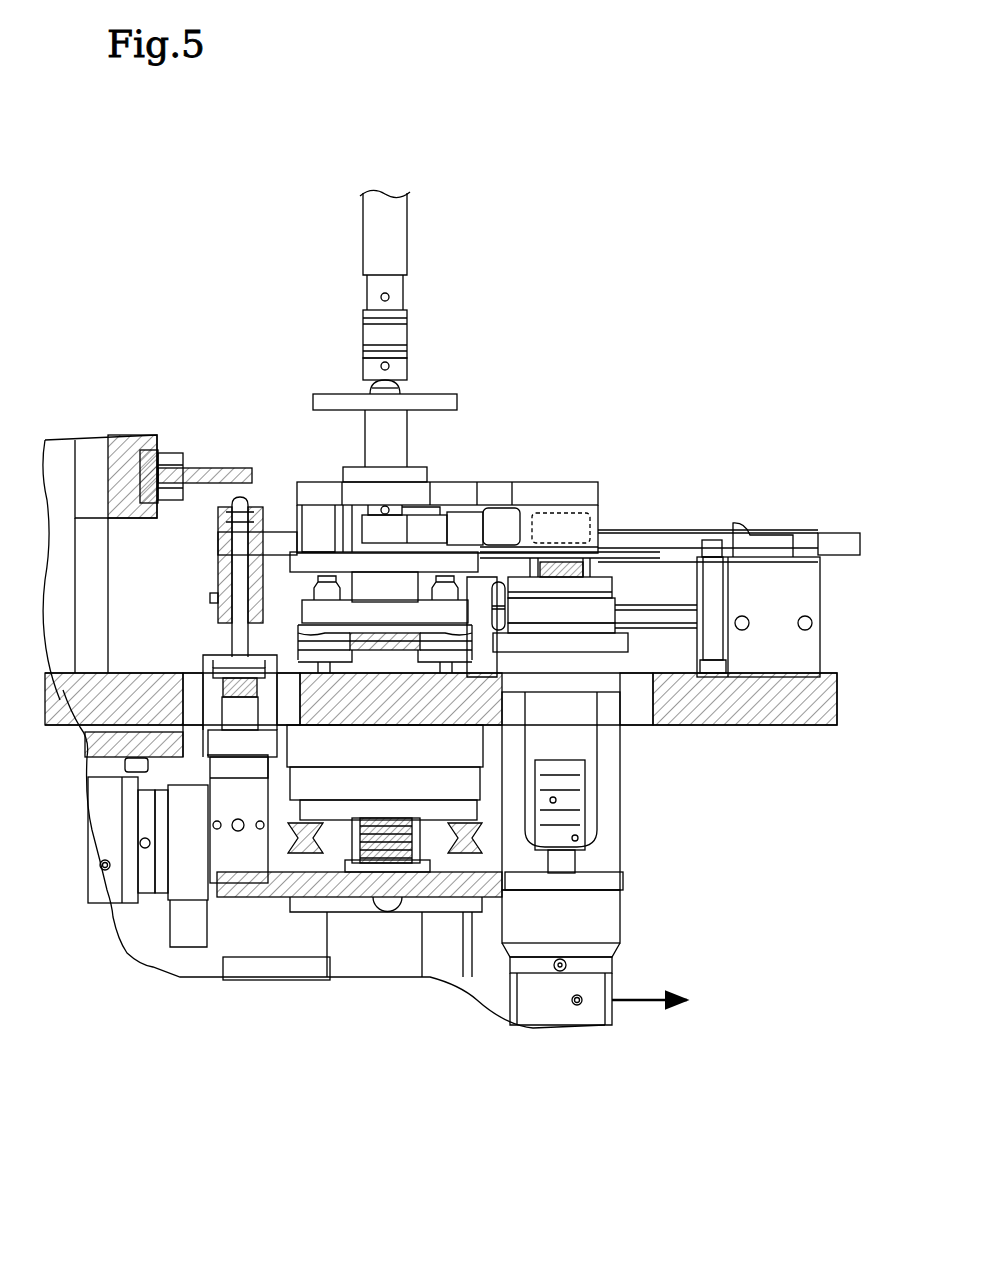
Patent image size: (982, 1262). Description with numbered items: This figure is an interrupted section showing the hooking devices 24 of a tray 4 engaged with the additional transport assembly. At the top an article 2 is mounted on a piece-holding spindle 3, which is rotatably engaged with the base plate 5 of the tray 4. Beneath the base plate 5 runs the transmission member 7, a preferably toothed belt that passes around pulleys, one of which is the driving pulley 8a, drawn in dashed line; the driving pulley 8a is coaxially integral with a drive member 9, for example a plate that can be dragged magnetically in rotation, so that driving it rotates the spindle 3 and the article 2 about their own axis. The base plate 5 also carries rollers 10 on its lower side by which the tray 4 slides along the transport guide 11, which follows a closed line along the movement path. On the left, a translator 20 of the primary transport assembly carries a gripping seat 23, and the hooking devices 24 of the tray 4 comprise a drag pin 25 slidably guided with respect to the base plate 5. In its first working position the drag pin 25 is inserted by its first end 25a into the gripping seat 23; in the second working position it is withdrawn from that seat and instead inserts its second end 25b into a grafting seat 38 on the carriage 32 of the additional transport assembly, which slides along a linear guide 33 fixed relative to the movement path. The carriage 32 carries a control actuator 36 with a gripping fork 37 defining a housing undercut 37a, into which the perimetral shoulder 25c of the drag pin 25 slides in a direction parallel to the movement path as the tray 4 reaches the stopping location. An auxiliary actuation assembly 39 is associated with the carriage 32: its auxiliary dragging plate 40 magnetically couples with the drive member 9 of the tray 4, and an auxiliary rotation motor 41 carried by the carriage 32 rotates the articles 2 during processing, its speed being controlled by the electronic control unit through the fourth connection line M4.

The article 2 is at (400, 218).
The piece-holding spindle 3 is at (375, 318).
The tray 4 is at (606, 479).
The base plate 5 is at (563, 490).
The transmission member 7 is at (500, 525).
The driving pulley 8a is at (590, 523).
The drive member 9 is at (612, 592).
The roller 10 is at (442, 665).
The transport guide 11 is at (385, 652).
The translator 20 is at (192, 470).
The gripping seat 23 is at (240, 497).
The hooking devices 24 is at (263, 500).
The drag pin 25 is at (240, 580).
The first end 25a is at (250, 490).
The second end 25b is at (240, 727).
The perimetral shoulder 25c is at (237, 673).
The carriage 32 is at (358, 883).
The linear guide 33 is at (465, 845).
The control actuator 36 is at (227, 853).
The gripping fork 37 is at (273, 663).
The housing undercut 37a is at (217, 692).
The grafting seat 38 is at (257, 733).
The auxiliary actuation assembly 39 is at (632, 833).
The auxiliary dragging plate 40 is at (598, 608).
The auxiliary rotation motor 41 is at (597, 925).
The fourth connection line M4 is at (665, 1002).